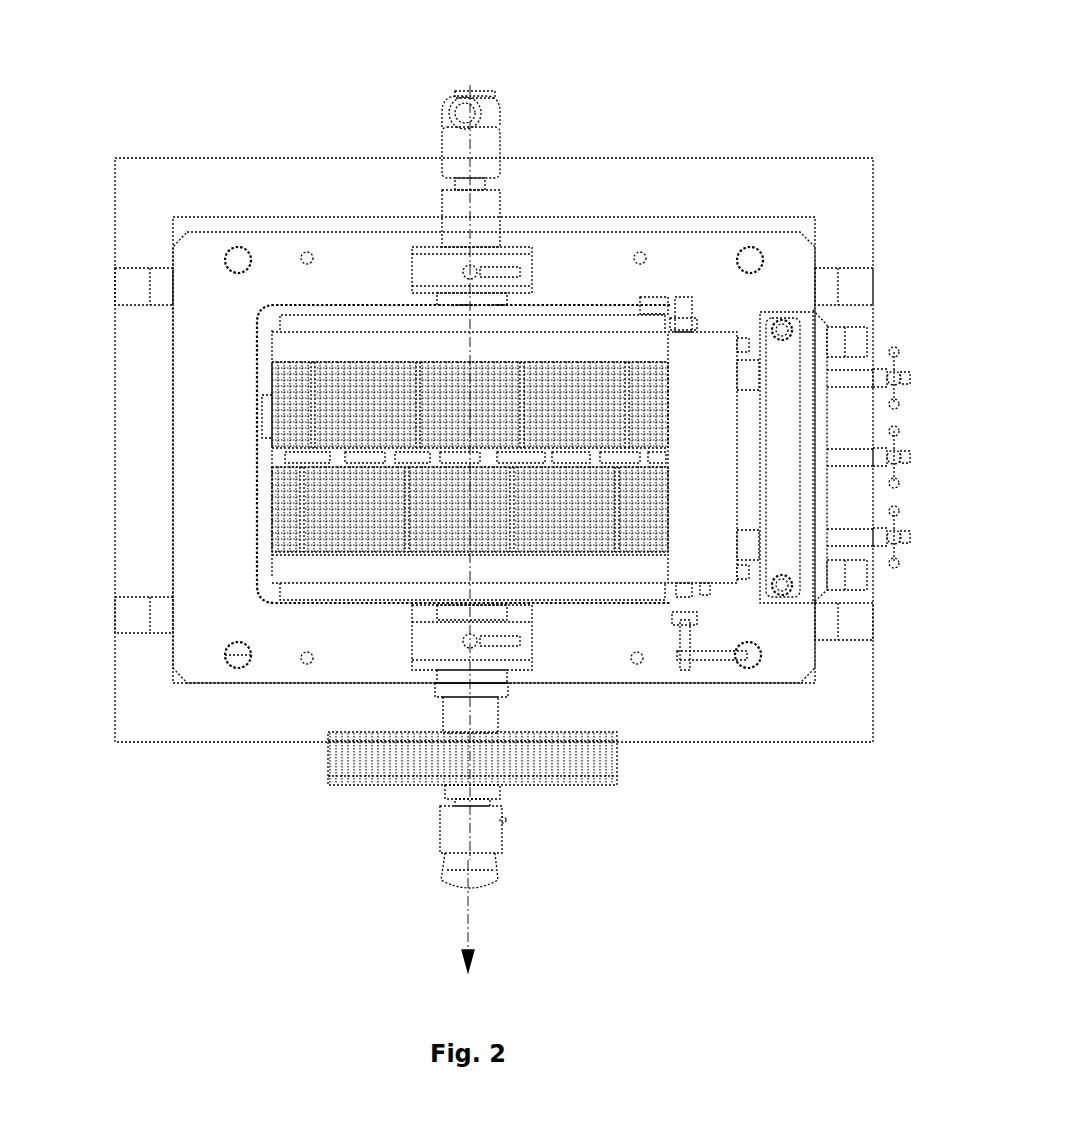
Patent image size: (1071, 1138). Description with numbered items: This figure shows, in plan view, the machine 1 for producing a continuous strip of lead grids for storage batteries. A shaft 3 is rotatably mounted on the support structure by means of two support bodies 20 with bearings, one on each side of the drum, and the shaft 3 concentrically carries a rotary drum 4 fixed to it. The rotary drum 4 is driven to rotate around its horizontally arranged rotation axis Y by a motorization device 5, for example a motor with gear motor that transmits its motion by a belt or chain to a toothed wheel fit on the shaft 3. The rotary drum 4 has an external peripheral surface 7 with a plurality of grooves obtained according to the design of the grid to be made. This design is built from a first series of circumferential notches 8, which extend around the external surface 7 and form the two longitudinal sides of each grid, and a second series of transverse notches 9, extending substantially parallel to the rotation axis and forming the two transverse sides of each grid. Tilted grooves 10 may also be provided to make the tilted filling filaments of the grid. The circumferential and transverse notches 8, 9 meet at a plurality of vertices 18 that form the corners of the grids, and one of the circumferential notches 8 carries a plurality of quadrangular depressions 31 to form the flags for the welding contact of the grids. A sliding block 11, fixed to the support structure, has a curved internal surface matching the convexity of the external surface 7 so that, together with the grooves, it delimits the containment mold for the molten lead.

The machining device 1 is at (752, 86).
The shaft 3 is at (450, 118).
The rotary drum 4 is at (287, 345).
The motorization device 5 is at (314, 825).
The external peripheral surface 7 is at (372, 405).
The circumferential notches 8 is at (265, 430).
The transverse notches 9 is at (513, 555).
The tilted grooves 10 is at (605, 362).
The sliding block 11 is at (695, 392).
The vertices 18 is at (518, 362).
The support bodies 20 is at (430, 275).
The quadrangular depressions 31 is at (333, 458).